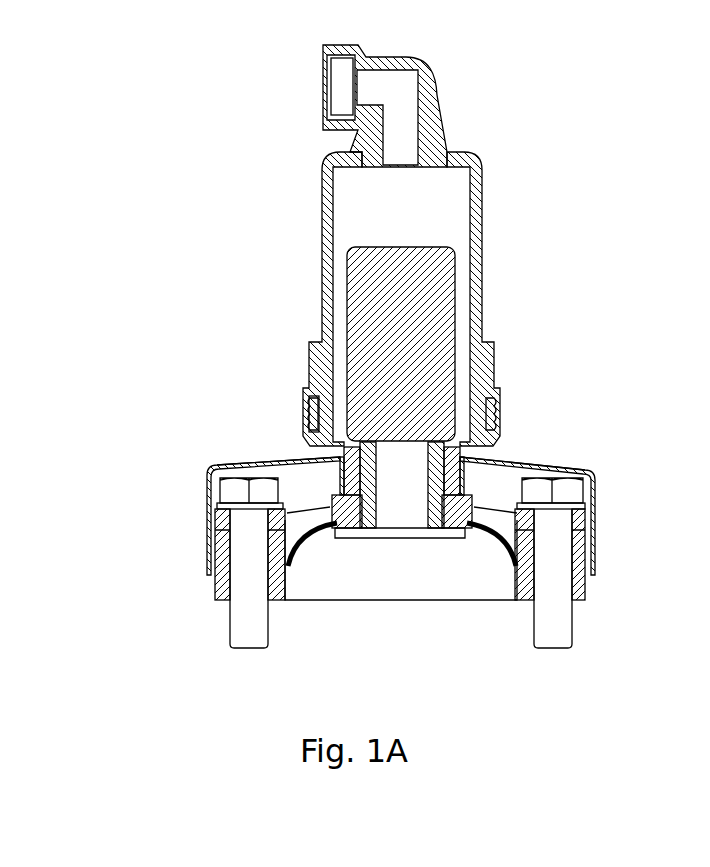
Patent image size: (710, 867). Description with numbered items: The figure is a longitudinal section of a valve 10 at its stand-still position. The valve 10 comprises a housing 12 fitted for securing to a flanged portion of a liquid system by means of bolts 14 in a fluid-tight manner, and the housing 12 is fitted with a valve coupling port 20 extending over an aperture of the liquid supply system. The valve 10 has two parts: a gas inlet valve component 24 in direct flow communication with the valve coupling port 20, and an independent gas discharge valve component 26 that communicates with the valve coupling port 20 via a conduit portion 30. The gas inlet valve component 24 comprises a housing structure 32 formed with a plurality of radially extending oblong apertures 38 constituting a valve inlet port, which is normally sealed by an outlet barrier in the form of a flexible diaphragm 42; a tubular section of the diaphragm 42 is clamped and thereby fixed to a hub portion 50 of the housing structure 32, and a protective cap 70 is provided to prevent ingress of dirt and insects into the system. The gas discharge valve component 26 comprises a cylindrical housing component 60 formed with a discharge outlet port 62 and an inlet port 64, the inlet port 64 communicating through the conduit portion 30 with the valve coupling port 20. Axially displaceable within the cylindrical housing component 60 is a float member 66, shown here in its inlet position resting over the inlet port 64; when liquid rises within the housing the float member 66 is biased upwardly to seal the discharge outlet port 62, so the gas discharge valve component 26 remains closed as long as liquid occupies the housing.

The valve 10 is at (213, 163).
The housing 12 is at (500, 420).
The bolts 14 is at (238, 491).
The valve coupling port 20 is at (375, 600).
The gas inlet valve component 24 is at (242, 460).
The gas discharge valve component 26 is at (543, 246).
The conduit portion 30 is at (308, 425).
The housing structure 32 is at (585, 585).
The radially extending oblong apertures 38 is at (485, 517).
The diaphragm 42 is at (592, 532).
The hub portion 50 is at (473, 495).
The cylindrical housing component 60 is at (475, 297).
The discharge outlet port 62 is at (403, 165).
The inlet port 64 is at (400, 482).
The float member 66 is at (425, 250).
The protective cap 70 is at (560, 460).